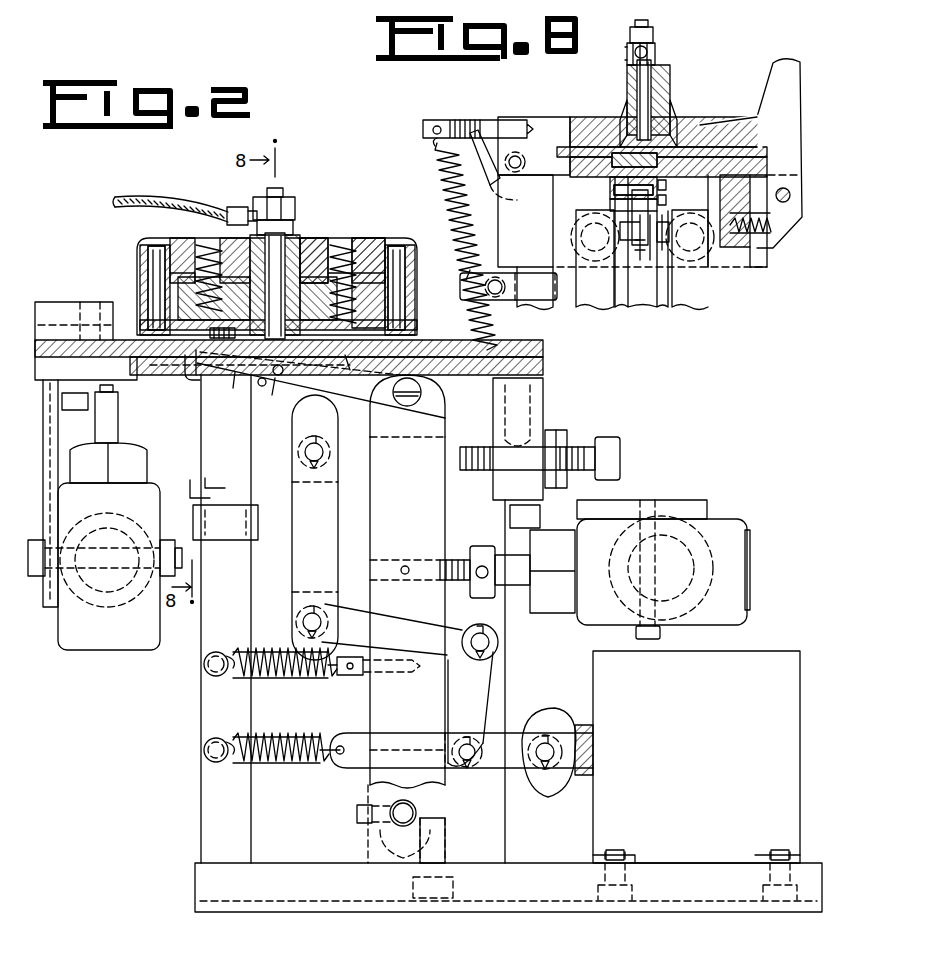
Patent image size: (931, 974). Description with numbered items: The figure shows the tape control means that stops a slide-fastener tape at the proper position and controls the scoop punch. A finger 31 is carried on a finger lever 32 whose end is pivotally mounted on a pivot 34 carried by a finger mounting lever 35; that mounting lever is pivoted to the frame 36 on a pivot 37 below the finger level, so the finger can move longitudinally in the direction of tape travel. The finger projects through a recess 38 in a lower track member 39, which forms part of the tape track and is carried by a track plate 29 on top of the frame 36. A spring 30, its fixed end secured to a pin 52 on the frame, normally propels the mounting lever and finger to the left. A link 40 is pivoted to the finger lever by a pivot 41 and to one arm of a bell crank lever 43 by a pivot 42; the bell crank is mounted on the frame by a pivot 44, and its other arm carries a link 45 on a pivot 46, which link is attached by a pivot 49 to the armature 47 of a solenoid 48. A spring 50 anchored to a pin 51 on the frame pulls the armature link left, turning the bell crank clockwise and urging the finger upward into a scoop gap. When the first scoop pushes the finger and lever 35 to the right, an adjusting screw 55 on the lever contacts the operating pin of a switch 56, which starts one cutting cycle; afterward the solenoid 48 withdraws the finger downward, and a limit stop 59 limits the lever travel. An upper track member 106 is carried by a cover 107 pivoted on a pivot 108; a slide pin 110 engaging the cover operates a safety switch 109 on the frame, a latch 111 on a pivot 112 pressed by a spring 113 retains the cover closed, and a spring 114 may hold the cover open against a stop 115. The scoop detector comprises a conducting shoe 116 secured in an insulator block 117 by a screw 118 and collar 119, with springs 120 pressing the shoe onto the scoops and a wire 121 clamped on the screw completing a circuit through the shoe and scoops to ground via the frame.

In FIG. 2, the track plate 29 is at (543, 369).
In FIG. 8, the track plate 29 is at (767, 157).
In FIG. 2, the spring 30 is at (300, 680).
In FIG. 2, the finger 31 is at (188, 378).
In FIG. 8, the finger 31 is at (620, 196).
In FIG. 2, the finger lever 32 is at (278, 396).
In FIG. 8, the finger lever 32 is at (620, 183).
In FIG. 2, the pivot 34 is at (422, 396).
In FIG. 8, the pivot 34 is at (668, 197).
In FIG. 2, the finger mounting lever 35 is at (440, 491).
In FIG. 8, the finger mounting lever 35 is at (660, 300).
In FIG. 2, the frame 36 is at (207, 872).
In FIG. 8, the frame 36 is at (722, 184).
In FIG. 2, the pivot 37 is at (395, 822).
In FIG. 2, the recess 38 is at (165, 380).
In FIG. 2, the lower track member 39 is at (543, 348).
In FIG. 8, the lower track member 39 is at (705, 145).
In FIG. 2, the link 40 is at (300, 555).
In FIG. 8, the link 40 is at (645, 305).
In FIG. 2, the pivot 41 is at (300, 446).
In FIG. 8, the pivot 41 is at (669, 230).
In FIG. 2, the pivot 42 is at (302, 622).
In FIG. 2, the bell crank lever 43 is at (493, 673).
In FIG. 2, the pivot 44 is at (498, 642).
In FIG. 2, the link 45 is at (495, 770).
In FIG. 2, the pivot 46 is at (464, 768).
In FIG. 2, the armature 47 is at (552, 712).
In FIG. 2, the solenoid 48 is at (696, 775).
In FIG. 2, the pivot 49 is at (538, 768).
In FIG. 2, the spring 50 is at (288, 768).
In FIG. 2, the pin 51 is at (205, 758).
In FIG. 2, the pin 52 is at (205, 672).
In FIG. 2, the adjusting screw 55 is at (482, 545).
In FIG. 2, the switch 56 is at (722, 522).
In FIG. 2, the limit stop 59 is at (605, 440).
In FIG. 2, the upper track member 106 is at (140, 302).
In FIG. 8, the upper track member 106 is at (590, 118).
In FIG. 2, the cover 107 is at (78, 300).
In FIG. 8, the cover 107 is at (528, 117).
In FIG. 8, the pivot 108 is at (513, 170).
In FIG. 2, the switch 109 is at (108, 648).
In FIG. 2, the slide pin 110 is at (118, 395).
In FIG. 8, the latch 111 is at (788, 80).
In FIG. 8, the pivot 112 is at (786, 203).
In FIG. 8, the spring 113 is at (758, 237).
In FIG. 8, the spring 114 is at (436, 172).
In FIG. 8, the stop 115 is at (490, 172).
In FIG. 2, the conducting shoe 116 is at (330, 345).
In FIG. 8, the conducting shoe 116 is at (627, 128).
In FIG. 2, the insulator block 117 is at (372, 250).
In FIG. 8, the insulator block 117 is at (676, 120).
In FIG. 2, the screw 118 is at (290, 195).
In FIG. 8, the screw 118 is at (655, 30).
In FIG. 2, the collar 119 is at (298, 240).
In FIG. 8, the collar 119 is at (660, 60).
In FIG. 2, the springs 120 is at (210, 248).
In FIG. 2, the wire 121 is at (145, 195).
In FIG. 8, the wire 121 is at (626, 53).